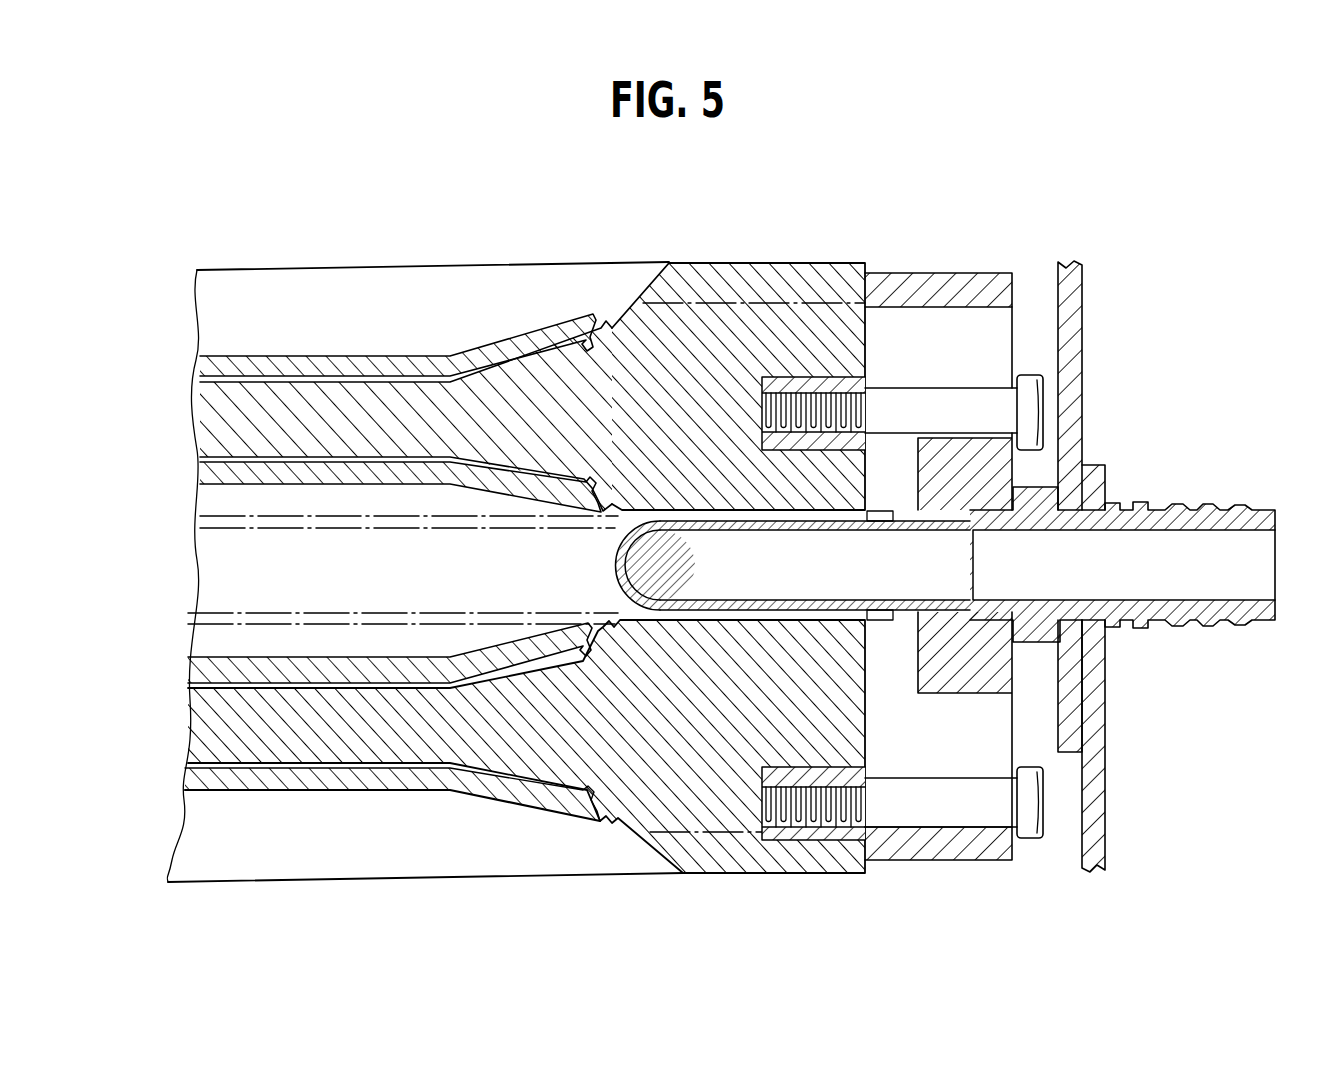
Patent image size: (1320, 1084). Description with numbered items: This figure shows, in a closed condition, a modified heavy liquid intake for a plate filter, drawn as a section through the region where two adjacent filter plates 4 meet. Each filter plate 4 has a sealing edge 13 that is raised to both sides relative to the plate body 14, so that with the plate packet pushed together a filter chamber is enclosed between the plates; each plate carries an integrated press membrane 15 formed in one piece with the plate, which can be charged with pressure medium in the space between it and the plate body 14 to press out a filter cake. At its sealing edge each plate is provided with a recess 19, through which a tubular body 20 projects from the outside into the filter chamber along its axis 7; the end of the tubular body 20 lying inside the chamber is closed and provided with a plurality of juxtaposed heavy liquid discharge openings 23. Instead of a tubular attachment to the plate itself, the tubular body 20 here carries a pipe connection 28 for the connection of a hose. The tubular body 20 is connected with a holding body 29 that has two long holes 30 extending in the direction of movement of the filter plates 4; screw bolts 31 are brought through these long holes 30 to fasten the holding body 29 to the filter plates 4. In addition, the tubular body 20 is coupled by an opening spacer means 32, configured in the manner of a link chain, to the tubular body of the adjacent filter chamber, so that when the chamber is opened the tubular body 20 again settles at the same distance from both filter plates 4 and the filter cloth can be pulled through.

The filter plate 4 is at (733, 251).
The axis 7 is at (296, 522).
The sealing edge 13 is at (806, 262).
The plate body 14 is at (228, 413).
The press membrane 15 is at (256, 366).
The recess 19 is at (700, 838).
The tubular body 20 is at (893, 528).
The heavy liquid discharge openings 23 is at (617, 565).
The pipe connection 28 is at (1200, 532).
The holding body 29 is at (968, 275).
The long holes 30 is at (995, 330).
The screw bolts 31 is at (955, 412).
The opening spacer means 32 is at (1070, 695).